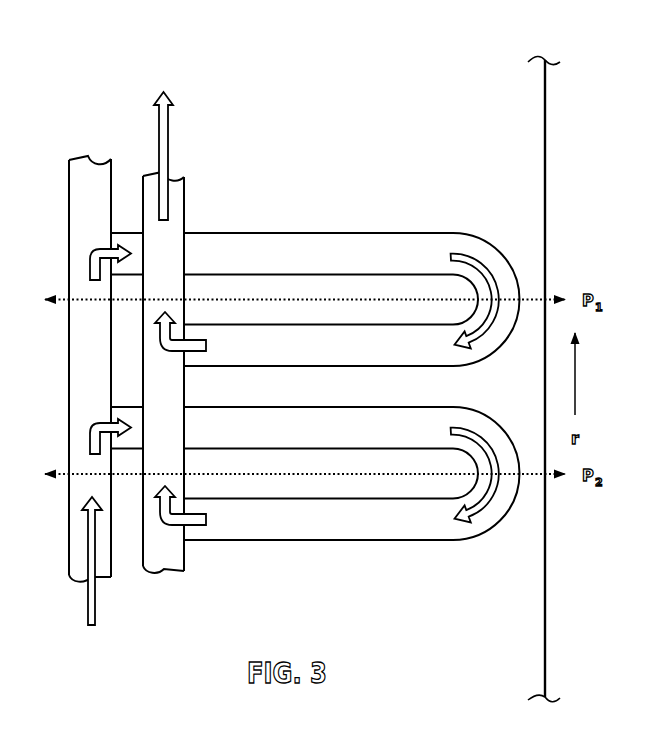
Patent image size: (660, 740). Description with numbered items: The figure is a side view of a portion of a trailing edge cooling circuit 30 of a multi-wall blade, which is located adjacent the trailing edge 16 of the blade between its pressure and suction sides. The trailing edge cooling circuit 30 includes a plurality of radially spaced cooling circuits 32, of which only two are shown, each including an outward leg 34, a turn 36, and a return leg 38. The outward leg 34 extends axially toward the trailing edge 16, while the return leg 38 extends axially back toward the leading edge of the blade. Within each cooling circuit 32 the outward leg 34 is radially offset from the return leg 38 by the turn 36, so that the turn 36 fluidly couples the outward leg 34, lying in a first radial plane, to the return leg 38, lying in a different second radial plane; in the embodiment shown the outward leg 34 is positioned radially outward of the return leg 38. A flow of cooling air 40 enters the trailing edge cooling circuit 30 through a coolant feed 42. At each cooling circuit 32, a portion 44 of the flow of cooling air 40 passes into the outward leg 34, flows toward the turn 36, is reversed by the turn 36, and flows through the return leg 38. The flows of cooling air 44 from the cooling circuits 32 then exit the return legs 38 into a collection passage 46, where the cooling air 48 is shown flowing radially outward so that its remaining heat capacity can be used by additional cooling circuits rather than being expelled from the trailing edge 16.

The trailing edge 16 is at (558, 628).
The trailing edge cooling circuit 30 is at (267, 92).
The cooling circuit 32 is at (322, 385).
The outward leg 34 is at (350, 233).
The turn 36 is at (510, 263).
The return leg 38 is at (268, 367).
The flow of cooling air 40 is at (95, 607).
The coolant feed 42 is at (87, 158).
The portion of the flow of cooling air 44 is at (97, 254).
The collection passage 46 is at (185, 193).
The cooling air 48 is at (168, 128).